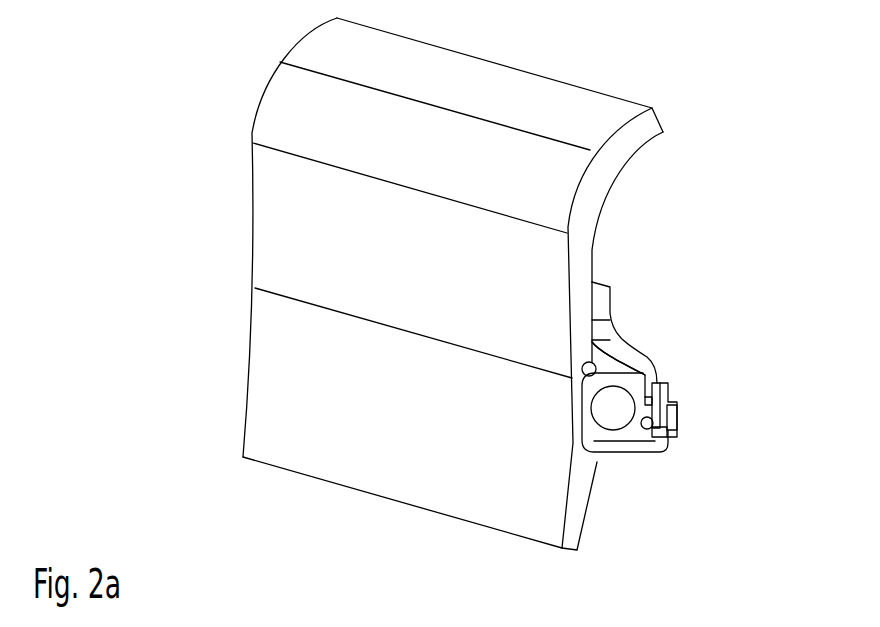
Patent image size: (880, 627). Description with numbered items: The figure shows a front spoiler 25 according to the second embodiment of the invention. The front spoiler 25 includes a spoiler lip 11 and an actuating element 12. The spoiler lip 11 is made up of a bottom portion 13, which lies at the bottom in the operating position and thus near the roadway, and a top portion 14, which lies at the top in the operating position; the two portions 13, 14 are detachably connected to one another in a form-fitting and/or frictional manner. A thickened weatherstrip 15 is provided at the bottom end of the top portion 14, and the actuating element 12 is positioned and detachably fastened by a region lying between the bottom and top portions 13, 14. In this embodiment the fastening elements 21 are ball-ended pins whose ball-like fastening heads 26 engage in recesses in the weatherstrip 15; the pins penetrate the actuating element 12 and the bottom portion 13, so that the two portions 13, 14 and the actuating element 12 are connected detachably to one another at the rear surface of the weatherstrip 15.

The spoiler lip 11 is at (394, 284).
The actuating element 12 is at (612, 294).
The bottom portion of the spoiler lip 13 is at (373, 336).
The top portion of the spoiler lip 14 is at (250, 253).
The weatherstrip 15 is at (618, 435).
The fastening elements 21 is at (680, 420).
The front spoiler 25 is at (456, 284).
The ball-like fastening heads 26 is at (647, 430).